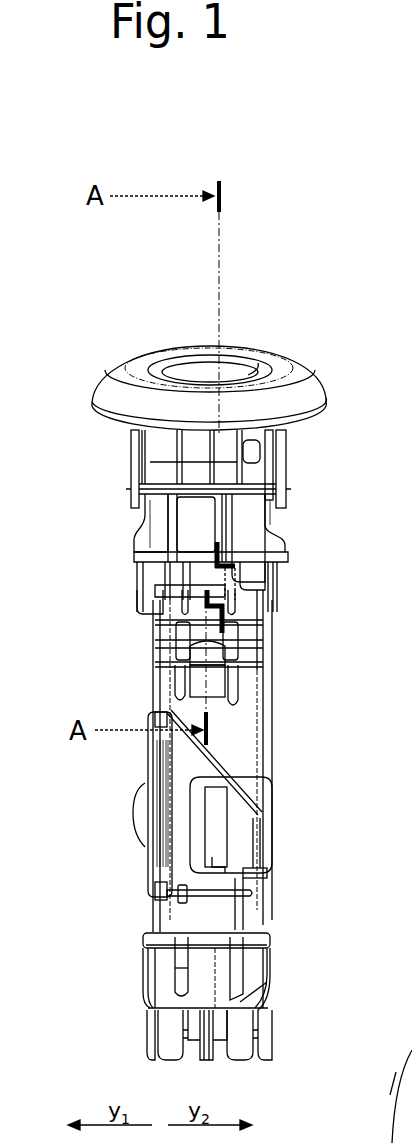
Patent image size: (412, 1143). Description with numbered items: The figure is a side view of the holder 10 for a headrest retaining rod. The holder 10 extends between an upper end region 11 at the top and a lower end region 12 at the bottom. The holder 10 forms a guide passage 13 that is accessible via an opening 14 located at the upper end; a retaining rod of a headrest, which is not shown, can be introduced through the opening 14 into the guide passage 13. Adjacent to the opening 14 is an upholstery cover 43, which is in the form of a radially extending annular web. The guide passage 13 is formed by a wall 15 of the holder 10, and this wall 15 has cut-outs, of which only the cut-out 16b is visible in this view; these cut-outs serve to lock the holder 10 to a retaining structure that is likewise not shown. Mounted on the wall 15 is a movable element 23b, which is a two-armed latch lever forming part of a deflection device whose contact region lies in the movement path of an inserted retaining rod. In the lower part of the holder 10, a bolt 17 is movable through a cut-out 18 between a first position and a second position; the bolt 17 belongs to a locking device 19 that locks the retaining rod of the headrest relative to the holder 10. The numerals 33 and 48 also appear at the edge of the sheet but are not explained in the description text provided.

The holder 10 is at (349, 213).
The upper end region 11 is at (81, 426).
The lower end region 12 is at (122, 1030).
The guide passage 13 is at (190, 378).
The opening 14 is at (203, 362).
The wall 15 is at (262, 730).
The cut-out 16b is at (200, 684).
The bolt 17 is at (250, 915).
The cut-out 18 is at (279, 905).
The locking device 19 is at (280, 890).
The movable element 23b is at (155, 662).
The edge region 33 is at (411, 1098).
The upholstery cover 43 is at (300, 380).
The contour 48 is at (411, 1030).